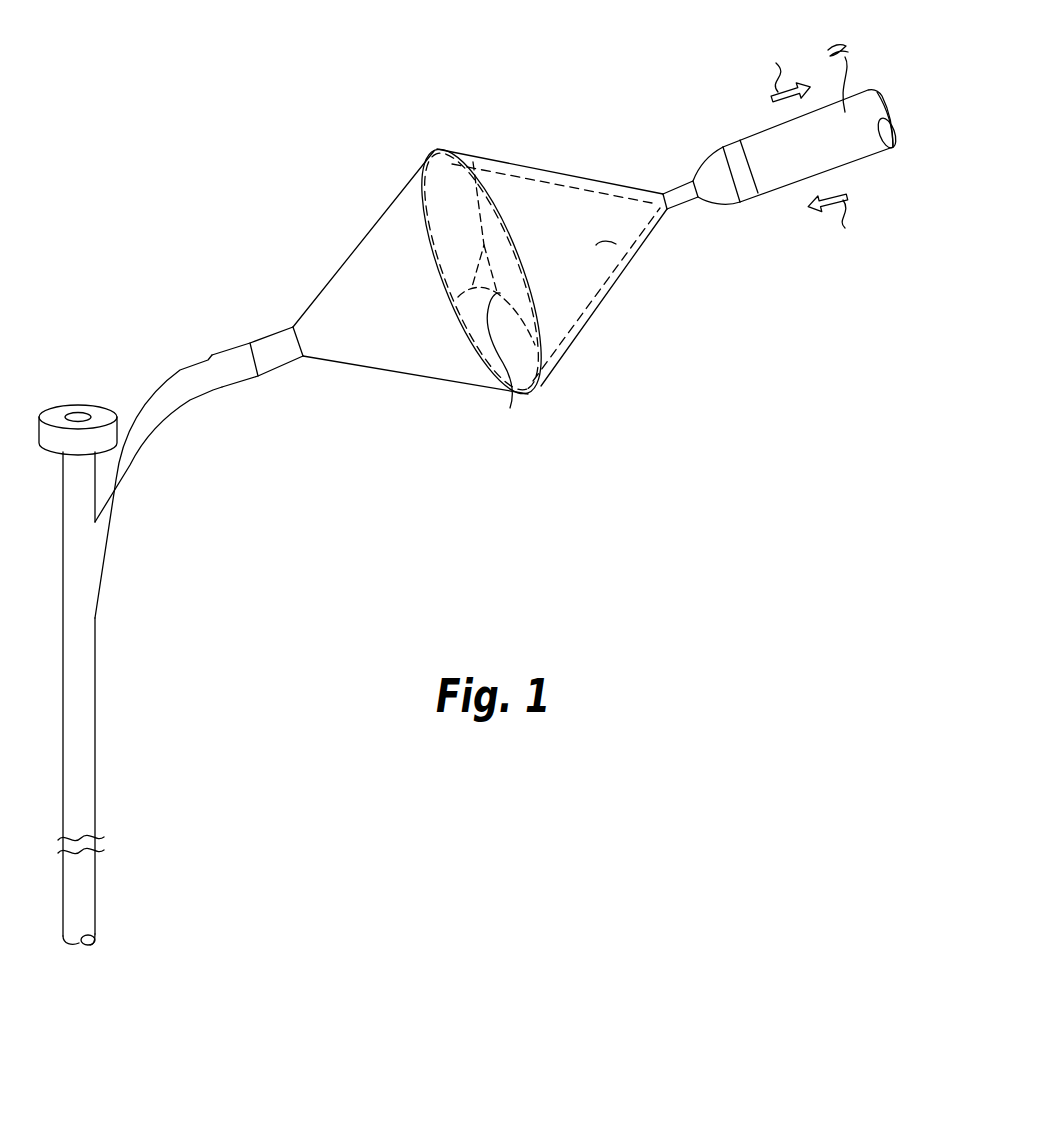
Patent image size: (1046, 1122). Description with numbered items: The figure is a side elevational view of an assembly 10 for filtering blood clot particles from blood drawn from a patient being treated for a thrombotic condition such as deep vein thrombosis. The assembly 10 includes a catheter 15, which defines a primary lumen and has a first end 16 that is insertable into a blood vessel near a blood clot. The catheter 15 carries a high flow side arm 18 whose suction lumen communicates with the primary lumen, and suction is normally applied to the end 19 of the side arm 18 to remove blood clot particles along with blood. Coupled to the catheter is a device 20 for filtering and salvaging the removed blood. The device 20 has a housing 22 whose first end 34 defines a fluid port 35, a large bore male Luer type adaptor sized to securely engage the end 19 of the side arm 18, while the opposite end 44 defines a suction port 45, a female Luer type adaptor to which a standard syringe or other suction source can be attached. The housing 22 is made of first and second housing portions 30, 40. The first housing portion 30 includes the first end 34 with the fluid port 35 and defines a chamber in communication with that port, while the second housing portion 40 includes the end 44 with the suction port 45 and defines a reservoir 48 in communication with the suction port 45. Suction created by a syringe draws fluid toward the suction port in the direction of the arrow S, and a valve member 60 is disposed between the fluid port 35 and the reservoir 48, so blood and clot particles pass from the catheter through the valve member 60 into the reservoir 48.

The assembly 10 is at (243, 234).
The catheter 15 is at (97, 722).
The first end 16 is at (95, 951).
The side arm 18 is at (168, 412).
The end 19 is at (260, 373).
The device 20 is at (566, 416).
The housing 22 is at (436, 147).
The first housing portion 30 is at (367, 372).
The first end 34 is at (312, 300).
The fluid port 35 is at (265, 333).
The second housing portion 40 is at (587, 325).
The opposite end 44 is at (668, 212).
The suction port 45 is at (670, 186).
The reservoir 48 is at (600, 243).
The valve member 60 is at (510, 408).